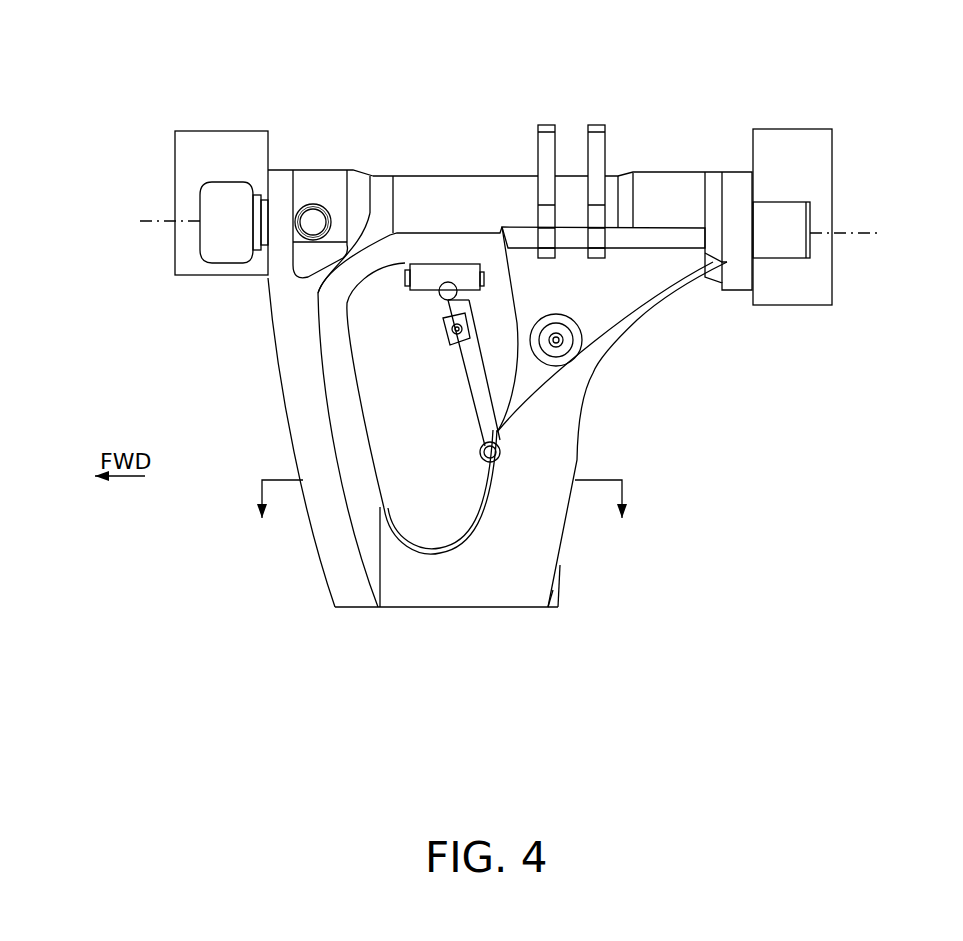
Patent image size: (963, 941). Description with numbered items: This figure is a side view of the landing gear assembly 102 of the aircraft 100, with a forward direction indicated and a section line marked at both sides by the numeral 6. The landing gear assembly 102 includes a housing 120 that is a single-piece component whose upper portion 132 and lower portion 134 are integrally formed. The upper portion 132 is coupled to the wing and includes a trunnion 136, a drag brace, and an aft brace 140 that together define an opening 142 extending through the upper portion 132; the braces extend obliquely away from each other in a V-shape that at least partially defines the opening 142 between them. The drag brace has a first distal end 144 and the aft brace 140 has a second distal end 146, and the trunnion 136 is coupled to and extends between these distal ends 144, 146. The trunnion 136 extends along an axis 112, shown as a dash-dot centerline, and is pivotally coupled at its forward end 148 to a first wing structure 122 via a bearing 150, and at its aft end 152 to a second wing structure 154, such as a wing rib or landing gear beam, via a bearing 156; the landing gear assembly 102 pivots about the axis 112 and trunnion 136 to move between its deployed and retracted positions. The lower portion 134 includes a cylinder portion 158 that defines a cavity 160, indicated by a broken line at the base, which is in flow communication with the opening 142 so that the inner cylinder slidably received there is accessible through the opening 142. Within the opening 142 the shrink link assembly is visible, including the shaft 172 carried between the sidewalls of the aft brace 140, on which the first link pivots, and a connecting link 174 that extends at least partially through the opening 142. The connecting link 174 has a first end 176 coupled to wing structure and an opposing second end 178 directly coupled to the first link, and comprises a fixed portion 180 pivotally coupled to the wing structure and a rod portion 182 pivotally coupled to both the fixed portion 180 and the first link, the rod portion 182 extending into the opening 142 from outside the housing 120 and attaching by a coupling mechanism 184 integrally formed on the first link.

The aircraft 100 is at (155, 336).
The landing gear assembly 102 is at (120, 104).
The axis 112 is at (160, 222).
The housing 120 is at (333, 500).
The first wing structure 122 is at (175, 157).
The upper portion 132 is at (670, 513).
The lower portion 134 is at (645, 610).
The trunnion 136 is at (428, 175).
The aft brace 140 is at (575, 412).
The opening 142 is at (362, 366).
The first distal end 144 is at (270, 292).
The second distal end 146 is at (622, 305).
The forward end 148 is at (313, 173).
The bearing 150 is at (233, 181).
The aft end 152 is at (722, 178).
The second wing structure 154 is at (780, 129).
The bearing 156 is at (771, 205).
The cylinder portion 158 is at (565, 600).
The cavity 160 is at (403, 578).
The shaft 172 is at (568, 348).
The connecting link 174 is at (440, 347).
The first end 176 is at (347, 338).
The second end 178 is at (452, 446).
The fixed portion 180 is at (432, 296).
The rod portion 182 is at (468, 402).
The coupling mechanism 184 is at (485, 460).
The section line 6- 6 is at (440, 521).